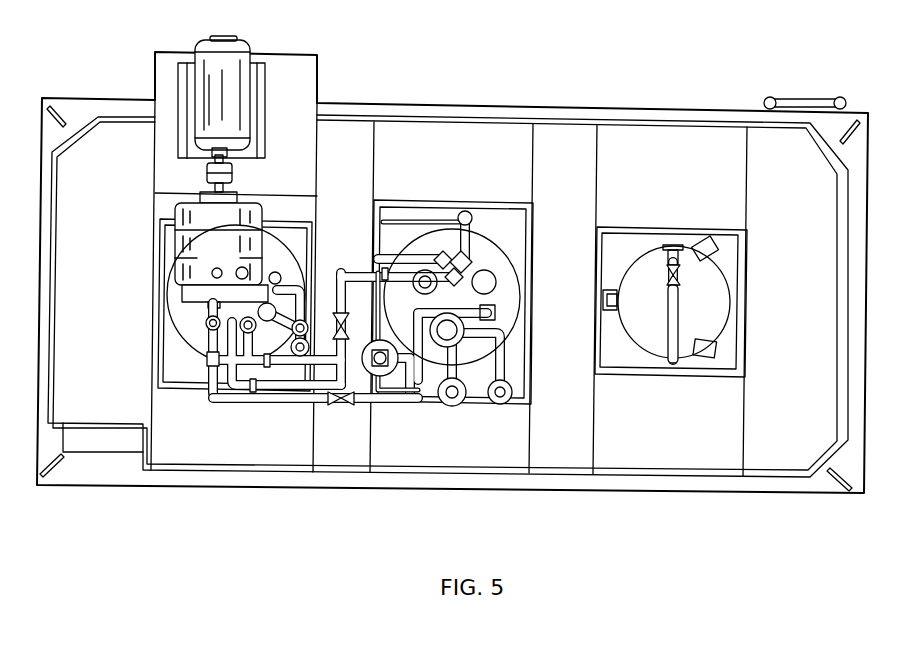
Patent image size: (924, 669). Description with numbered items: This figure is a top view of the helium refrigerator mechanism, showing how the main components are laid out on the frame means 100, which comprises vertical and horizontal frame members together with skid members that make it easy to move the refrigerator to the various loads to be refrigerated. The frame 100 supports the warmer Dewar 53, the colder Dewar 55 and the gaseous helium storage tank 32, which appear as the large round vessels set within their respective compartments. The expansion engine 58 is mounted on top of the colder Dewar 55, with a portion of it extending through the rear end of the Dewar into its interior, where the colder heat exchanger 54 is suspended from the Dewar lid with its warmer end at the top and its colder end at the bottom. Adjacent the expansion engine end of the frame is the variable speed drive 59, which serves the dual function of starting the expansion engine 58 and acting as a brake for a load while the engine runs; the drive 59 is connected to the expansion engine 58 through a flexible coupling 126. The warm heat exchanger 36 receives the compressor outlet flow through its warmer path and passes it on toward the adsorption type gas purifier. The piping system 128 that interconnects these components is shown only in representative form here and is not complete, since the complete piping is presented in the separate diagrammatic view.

The frame 100 is at (872, 112).
The variable speed drive 59 is at (200, 52).
The flexible coupling 126 is at (233, 173).
The expansion engine 58 is at (175, 212).
The colder Dewar 55 is at (163, 286).
The colder heat exchanger 54 is at (167, 289).
The warmer Dewar 53 is at (507, 277).
The warm heat exchanger 36 is at (508, 282).
The gaseous helium storage tank 32 is at (722, 297).
The piping system 128 is at (283, 405).